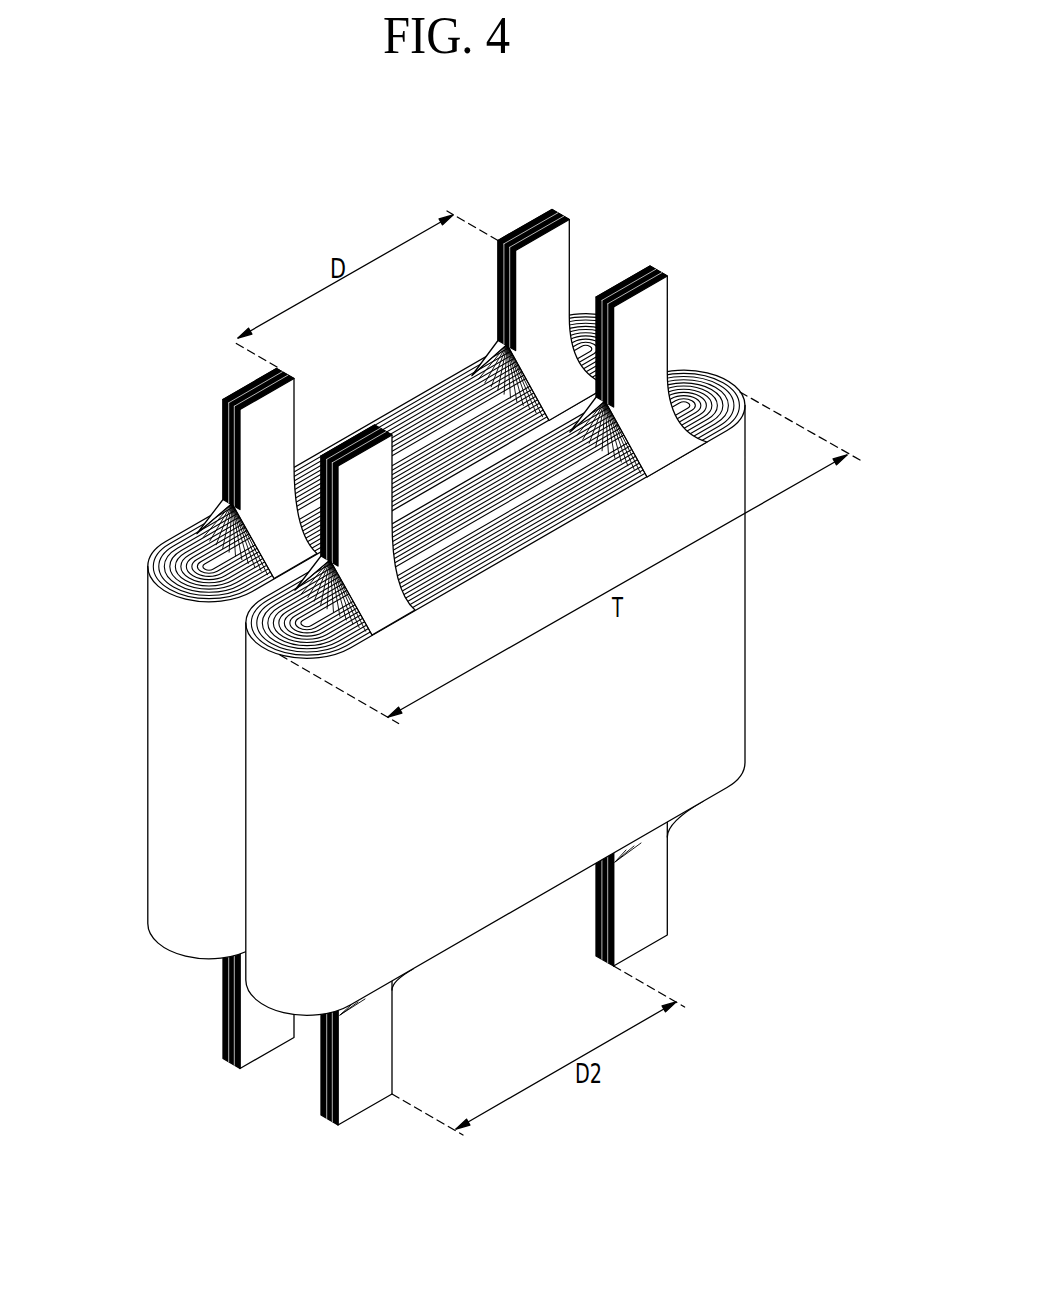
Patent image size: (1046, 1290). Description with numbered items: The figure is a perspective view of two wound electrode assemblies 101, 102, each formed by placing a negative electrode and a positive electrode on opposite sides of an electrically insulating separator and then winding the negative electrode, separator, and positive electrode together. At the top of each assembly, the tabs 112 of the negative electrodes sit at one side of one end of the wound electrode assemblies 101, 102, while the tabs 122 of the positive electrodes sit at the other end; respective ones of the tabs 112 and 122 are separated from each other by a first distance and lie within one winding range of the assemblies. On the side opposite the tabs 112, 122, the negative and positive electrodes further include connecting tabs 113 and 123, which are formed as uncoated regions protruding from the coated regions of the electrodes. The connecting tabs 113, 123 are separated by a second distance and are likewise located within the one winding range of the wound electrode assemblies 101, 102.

The electrode assembly 101 is at (749, 608).
The electrode assembly 102 is at (147, 710).
The tab 112 is at (330, 461).
The tab 122 is at (502, 240).
The connecting tab 113 is at (255, 1047).
The connecting tab 123 is at (665, 900).